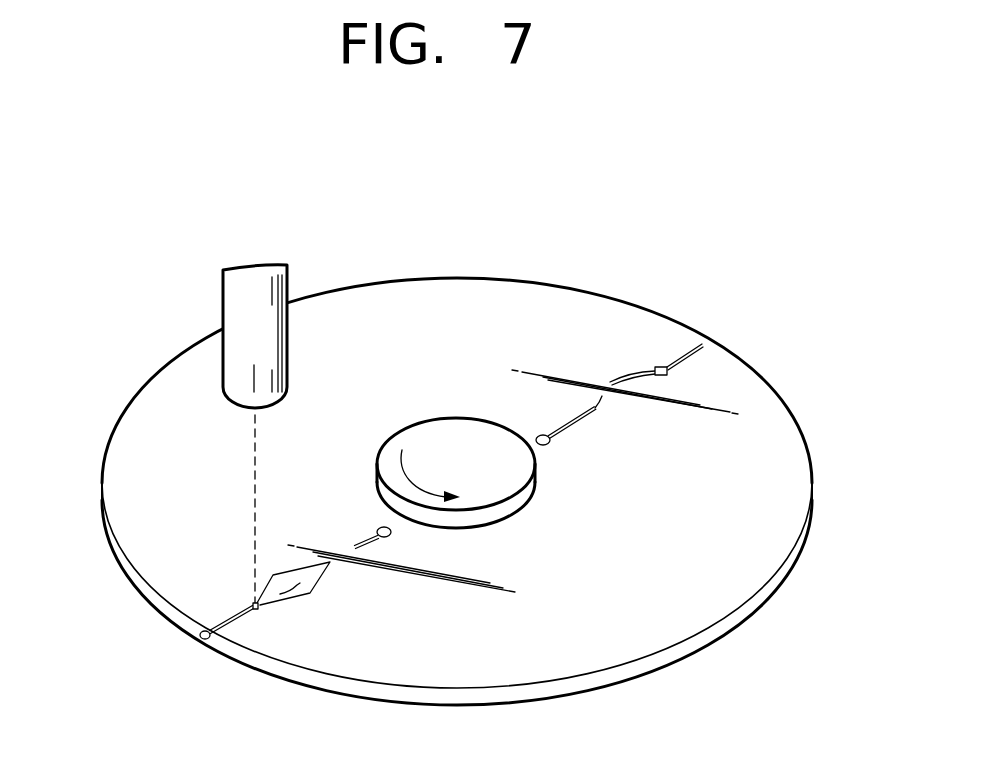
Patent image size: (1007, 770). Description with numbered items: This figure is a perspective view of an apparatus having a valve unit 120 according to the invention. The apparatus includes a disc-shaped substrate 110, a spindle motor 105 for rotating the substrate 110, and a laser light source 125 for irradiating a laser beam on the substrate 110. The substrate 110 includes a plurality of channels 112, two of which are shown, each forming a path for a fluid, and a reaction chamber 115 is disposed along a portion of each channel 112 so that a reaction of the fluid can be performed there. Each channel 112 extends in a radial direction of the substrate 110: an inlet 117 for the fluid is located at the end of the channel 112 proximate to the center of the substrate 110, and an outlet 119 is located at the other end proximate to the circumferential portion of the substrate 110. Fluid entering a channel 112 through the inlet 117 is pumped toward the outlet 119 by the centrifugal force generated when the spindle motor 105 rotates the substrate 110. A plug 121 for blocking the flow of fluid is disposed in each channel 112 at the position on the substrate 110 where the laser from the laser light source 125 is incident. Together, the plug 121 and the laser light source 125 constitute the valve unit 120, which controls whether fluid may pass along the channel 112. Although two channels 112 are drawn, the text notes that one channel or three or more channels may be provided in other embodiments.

The spindle motor 105 is at (442, 428).
The substrate 110 is at (780, 373).
The channel 112 is at (698, 347).
The reaction chamber 115 is at (633, 383).
The inlet 117 is at (540, 435).
The outlet 119 is at (200, 640).
The valve unit 120 is at (112, 324).
The plug 121 is at (660, 367).
The laser light source 125 is at (230, 360).